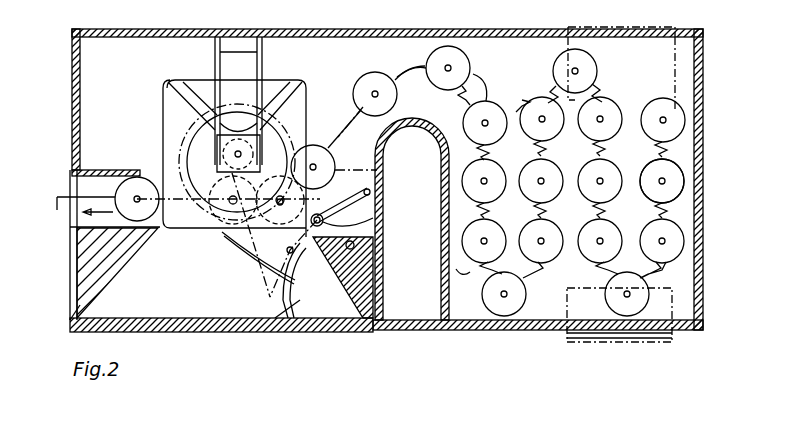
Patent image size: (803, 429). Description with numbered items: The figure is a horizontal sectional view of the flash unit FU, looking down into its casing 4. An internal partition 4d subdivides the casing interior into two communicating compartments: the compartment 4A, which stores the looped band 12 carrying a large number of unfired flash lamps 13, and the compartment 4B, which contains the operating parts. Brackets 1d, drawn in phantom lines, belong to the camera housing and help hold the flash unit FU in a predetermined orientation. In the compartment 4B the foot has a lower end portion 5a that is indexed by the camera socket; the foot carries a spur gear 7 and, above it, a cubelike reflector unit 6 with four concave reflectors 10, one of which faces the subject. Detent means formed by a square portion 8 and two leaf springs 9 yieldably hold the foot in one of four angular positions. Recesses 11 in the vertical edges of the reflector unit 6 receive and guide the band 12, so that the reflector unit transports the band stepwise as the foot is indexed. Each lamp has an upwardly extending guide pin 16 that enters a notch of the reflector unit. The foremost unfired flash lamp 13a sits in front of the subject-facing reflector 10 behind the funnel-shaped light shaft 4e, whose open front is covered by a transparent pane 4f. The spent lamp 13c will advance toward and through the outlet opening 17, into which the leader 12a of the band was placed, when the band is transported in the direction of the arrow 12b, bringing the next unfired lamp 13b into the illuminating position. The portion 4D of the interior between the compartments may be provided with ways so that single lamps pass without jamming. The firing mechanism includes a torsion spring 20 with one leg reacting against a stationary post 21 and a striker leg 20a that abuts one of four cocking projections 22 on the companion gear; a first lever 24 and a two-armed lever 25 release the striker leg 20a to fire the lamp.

The flash unit FU is at (710, 61).
The casing 4 is at (703, 262).
The transparent pane 4f is at (150, 332).
The brackets 1d is at (578, 27).
The compartment 4A is at (518, 77).
The flash lamps 13 is at (498, 308).
The internal partition 4d is at (470, 272).
The guide pin 16 is at (675, 184).
The portion of the casing interior 4D is at (424, 115).
The band 12 is at (400, 72).
The concave reflectors 10 is at (165, 100).
The leaf springs 9 is at (275, 45).
The spur gear 7 is at (212, 105).
The square portion 8 is at (262, 135).
The lower end portion 5a is at (252, 154).
The reflector unit 6 is at (318, 91).
The foremost unfired lamp 13b is at (326, 148).
The spent lamp 13c is at (140, 178).
The outlet opening 17 is at (57, 197).
The leader 12a is at (63, 212).
The arrow 12b is at (82, 245).
The light shaft 4e is at (70, 308).
The foremost unfired flash lamp 13a is at (208, 232).
The two-armed lever 25 is at (210, 255).
The recesses 11 is at (256, 255).
The first lever 24 is at (265, 290).
The stationary post 21 is at (372, 190).
The torsion spring 20 is at (373, 224).
The cocking projections 22 is at (290, 330).
The striker leg 20a is at (262, 330).
The compartment 4B is at (146, 75).